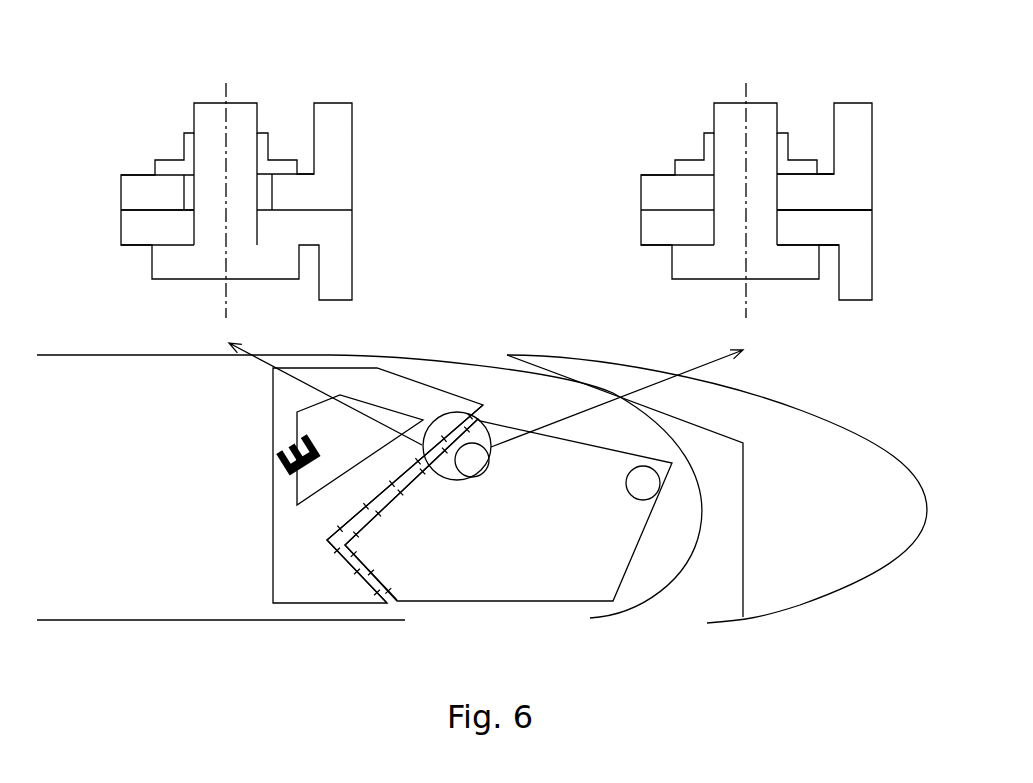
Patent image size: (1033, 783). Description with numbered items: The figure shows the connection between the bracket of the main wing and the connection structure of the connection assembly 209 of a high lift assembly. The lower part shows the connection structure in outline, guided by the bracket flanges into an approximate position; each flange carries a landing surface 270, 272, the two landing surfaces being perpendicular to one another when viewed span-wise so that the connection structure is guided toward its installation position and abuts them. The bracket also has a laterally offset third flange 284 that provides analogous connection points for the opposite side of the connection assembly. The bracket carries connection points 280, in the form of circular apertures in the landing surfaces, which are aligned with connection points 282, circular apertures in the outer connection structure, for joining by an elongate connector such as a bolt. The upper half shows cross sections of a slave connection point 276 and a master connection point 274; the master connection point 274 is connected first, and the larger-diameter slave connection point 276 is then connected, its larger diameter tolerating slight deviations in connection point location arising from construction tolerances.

The connection assembly 209 is at (542, 603).
The landing surface 270 is at (146, 185).
The landing surface 272 is at (798, 197).
The master connection point 274 is at (698, 82).
The slave connection point 276 is at (184, 67).
The connection point 280 is at (358, 570).
The connection point 282 is at (360, 561).
The third flange 284 is at (760, 223).